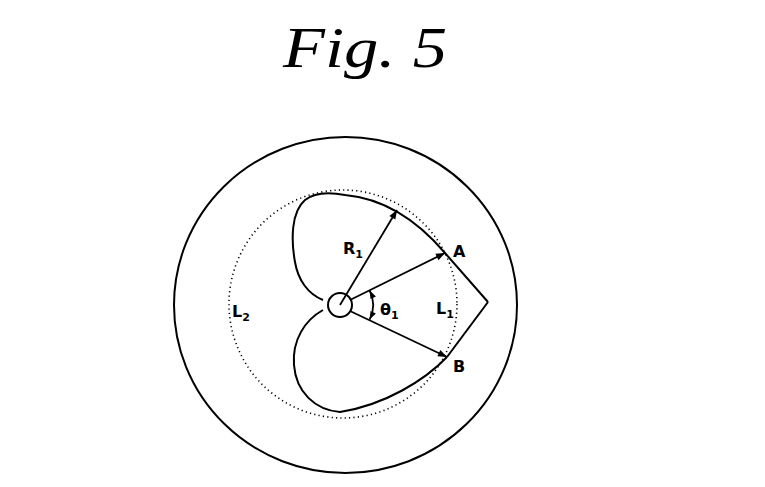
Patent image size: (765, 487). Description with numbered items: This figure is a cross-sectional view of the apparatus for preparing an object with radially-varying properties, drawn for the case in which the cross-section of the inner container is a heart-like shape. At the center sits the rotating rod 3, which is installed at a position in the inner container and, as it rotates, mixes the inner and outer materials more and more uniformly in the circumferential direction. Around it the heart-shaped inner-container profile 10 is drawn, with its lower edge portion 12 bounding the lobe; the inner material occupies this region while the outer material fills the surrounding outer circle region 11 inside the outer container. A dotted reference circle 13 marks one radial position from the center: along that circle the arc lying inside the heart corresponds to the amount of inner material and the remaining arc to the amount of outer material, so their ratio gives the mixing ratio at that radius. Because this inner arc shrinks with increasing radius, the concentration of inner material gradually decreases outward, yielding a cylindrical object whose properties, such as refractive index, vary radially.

The rotating rod 3 is at (322, 299).
The cam body profile 10 is at (477, 282).
The outer circle region 11 is at (453, 203).
The lower edge portion 12 is at (457, 325).
The reference circle 13 is at (236, 347).